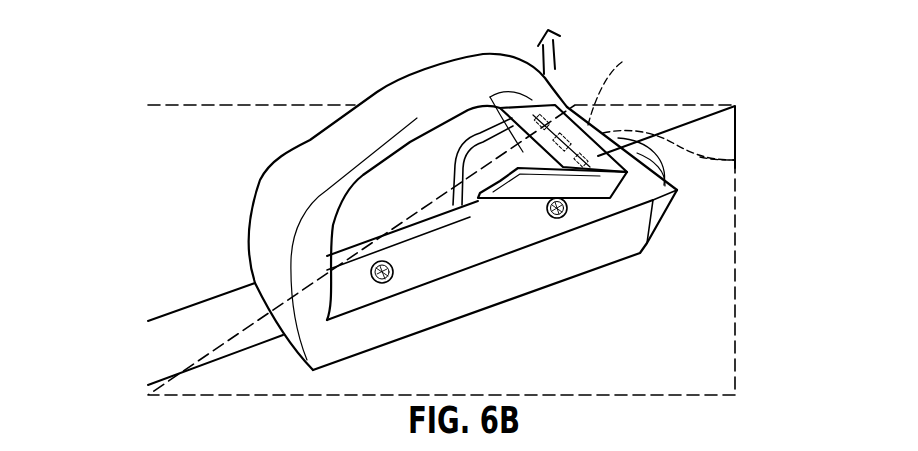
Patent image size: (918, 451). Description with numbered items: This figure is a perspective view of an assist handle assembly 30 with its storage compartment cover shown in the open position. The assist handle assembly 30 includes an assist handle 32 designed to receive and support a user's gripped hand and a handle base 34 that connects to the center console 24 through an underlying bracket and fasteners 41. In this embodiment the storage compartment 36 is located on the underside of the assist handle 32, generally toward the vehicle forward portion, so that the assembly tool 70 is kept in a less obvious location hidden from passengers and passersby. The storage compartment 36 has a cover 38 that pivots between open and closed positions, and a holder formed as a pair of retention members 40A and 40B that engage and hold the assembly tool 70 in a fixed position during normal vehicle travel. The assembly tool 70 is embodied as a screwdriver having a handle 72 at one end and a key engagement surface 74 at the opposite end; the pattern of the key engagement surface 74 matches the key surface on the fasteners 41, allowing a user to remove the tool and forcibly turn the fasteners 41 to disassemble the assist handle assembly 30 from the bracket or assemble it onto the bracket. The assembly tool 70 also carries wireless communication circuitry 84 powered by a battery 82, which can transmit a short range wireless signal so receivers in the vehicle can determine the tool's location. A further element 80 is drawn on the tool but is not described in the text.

The center console 24 is at (180, 237).
The assist handle assembly 30 is at (370, 62).
The assist handle 32 is at (340, 140).
The handle base 34 is at (352, 280).
The storage compartment 36 is at (667, 225).
The cover 38 is at (572, 210).
The retention member 40A is at (607, 130).
The retention member 40B is at (533, 190).
The fasteners 41 is at (393, 273).
The assembly tool 70 is at (604, 205).
The handle 72 is at (552, 112).
The key engagement surface 74 is at (683, 183).
The tab 80 is at (536, 48).
The battery 82 is at (616, 83).
The wireless communication circuitry 84 is at (735, 160).